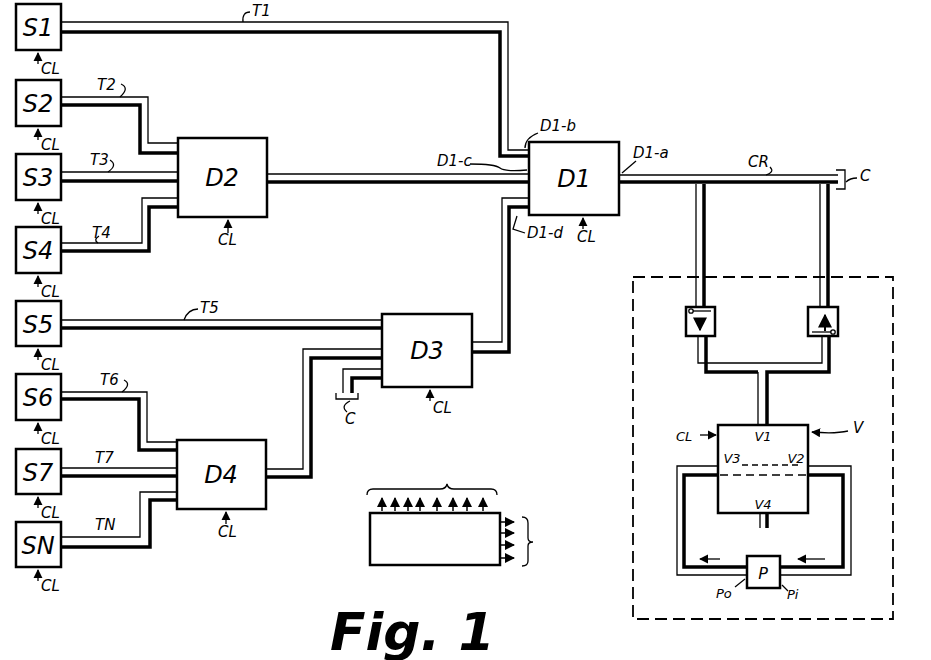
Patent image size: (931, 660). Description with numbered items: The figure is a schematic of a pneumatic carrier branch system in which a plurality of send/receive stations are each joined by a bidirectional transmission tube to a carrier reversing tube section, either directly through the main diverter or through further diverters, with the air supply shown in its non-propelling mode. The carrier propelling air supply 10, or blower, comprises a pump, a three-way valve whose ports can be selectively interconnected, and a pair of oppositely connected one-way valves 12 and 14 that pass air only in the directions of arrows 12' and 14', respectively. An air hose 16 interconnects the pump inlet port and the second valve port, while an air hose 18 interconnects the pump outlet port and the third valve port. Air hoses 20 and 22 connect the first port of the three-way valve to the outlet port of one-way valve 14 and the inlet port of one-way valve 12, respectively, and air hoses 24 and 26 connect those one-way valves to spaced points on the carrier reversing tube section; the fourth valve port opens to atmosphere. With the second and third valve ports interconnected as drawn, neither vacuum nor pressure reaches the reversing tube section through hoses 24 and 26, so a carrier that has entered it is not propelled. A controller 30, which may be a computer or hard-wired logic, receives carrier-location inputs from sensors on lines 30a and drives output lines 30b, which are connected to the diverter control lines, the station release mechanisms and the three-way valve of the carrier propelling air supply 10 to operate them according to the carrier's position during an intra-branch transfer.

The carrier propelling air supply 10 is at (631, 449).
The one-way valve 12 is at (841, 317).
The arrow 12' is at (797, 317).
The one-way valve 14 is at (696, 313).
The arrow 14' is at (674, 339).
The air hose 16 is at (851, 518).
The air hose 18 is at (677, 513).
The air hose 20 is at (725, 364).
The air hose 22 is at (832, 370).
The air hose 24 is at (706, 238).
The air hose 26 is at (830, 239).
The controller 30 is at (368, 537).
The lines 30a is at (536, 546).
The output lines 30b is at (441, 486).